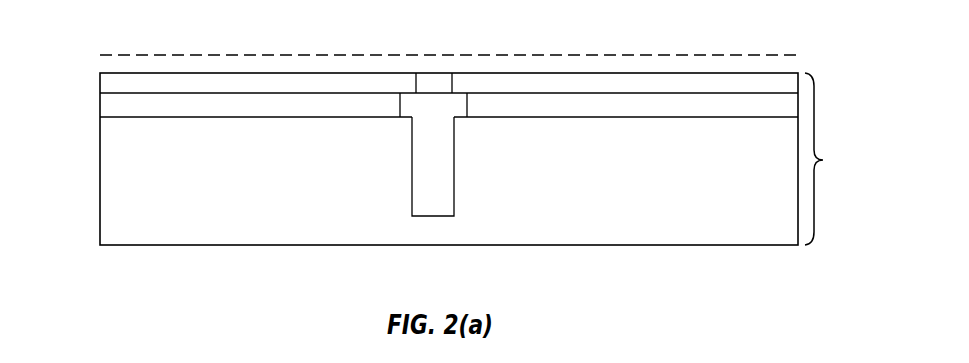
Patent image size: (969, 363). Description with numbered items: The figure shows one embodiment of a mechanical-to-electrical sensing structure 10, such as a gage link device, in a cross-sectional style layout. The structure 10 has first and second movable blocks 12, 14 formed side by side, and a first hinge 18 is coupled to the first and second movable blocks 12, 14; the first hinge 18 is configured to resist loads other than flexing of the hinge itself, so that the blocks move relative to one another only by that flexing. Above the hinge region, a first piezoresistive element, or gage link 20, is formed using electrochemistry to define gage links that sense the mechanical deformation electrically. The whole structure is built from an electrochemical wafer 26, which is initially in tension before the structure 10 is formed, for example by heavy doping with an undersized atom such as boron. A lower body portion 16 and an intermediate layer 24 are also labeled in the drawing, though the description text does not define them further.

The mechanical-to-electrical sensing structure 10 is at (181, 257).
The first movable block 12 is at (382, 154).
The second movable block 14 is at (514, 152).
The substrate 16 is at (117, 180).
The first hinge 18 is at (447, 166).
The gage link 20 is at (433, 82).
The layer 24 is at (740, 108).
The electrochemical wafer 26 is at (160, 55).